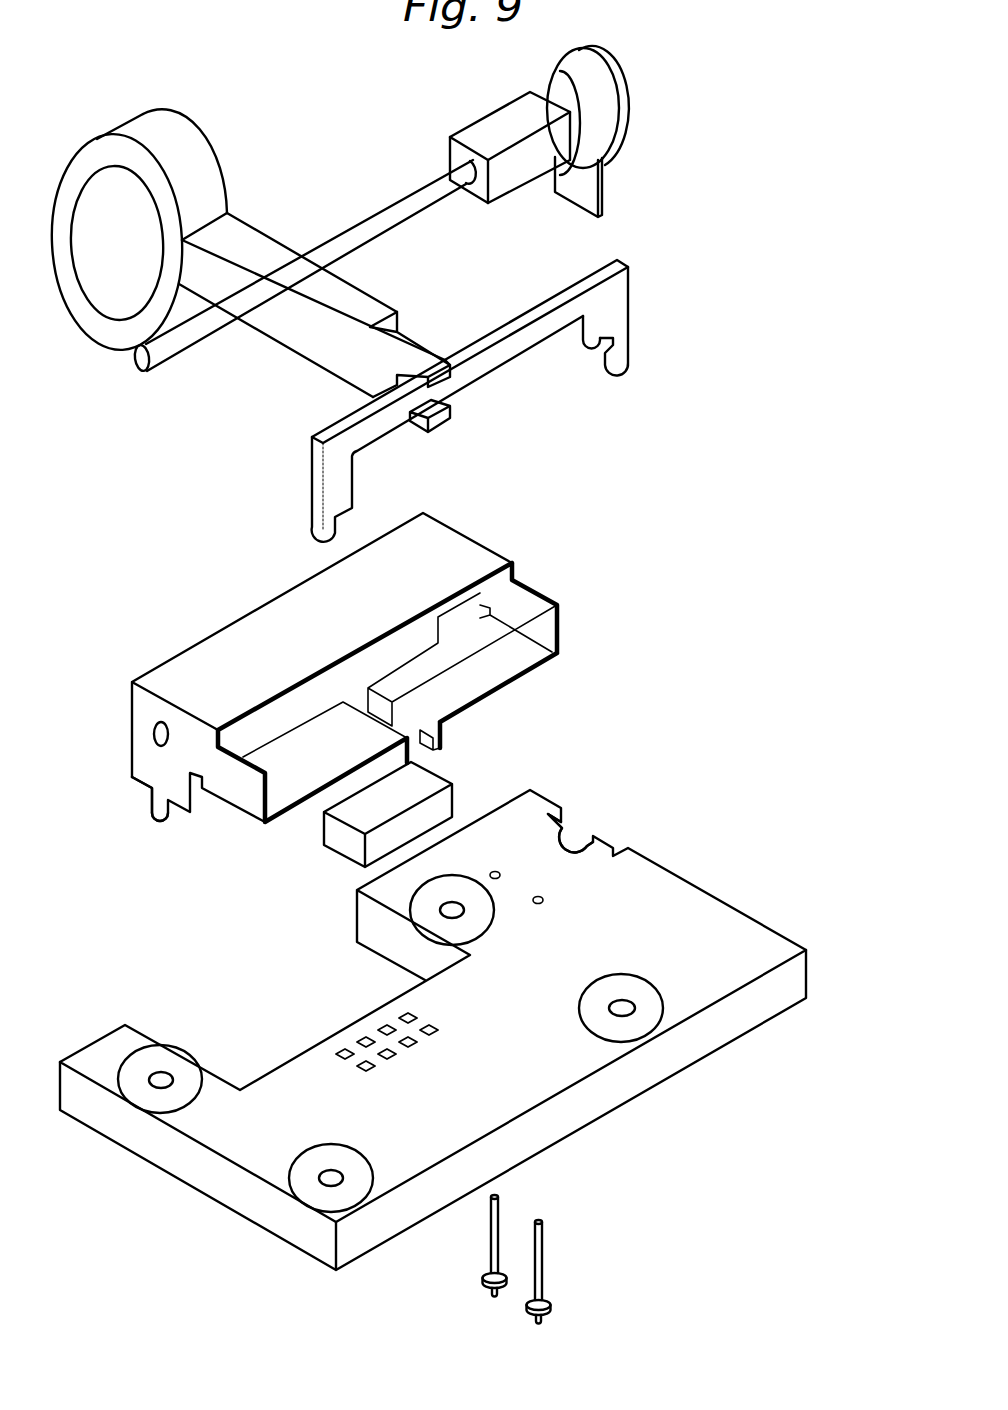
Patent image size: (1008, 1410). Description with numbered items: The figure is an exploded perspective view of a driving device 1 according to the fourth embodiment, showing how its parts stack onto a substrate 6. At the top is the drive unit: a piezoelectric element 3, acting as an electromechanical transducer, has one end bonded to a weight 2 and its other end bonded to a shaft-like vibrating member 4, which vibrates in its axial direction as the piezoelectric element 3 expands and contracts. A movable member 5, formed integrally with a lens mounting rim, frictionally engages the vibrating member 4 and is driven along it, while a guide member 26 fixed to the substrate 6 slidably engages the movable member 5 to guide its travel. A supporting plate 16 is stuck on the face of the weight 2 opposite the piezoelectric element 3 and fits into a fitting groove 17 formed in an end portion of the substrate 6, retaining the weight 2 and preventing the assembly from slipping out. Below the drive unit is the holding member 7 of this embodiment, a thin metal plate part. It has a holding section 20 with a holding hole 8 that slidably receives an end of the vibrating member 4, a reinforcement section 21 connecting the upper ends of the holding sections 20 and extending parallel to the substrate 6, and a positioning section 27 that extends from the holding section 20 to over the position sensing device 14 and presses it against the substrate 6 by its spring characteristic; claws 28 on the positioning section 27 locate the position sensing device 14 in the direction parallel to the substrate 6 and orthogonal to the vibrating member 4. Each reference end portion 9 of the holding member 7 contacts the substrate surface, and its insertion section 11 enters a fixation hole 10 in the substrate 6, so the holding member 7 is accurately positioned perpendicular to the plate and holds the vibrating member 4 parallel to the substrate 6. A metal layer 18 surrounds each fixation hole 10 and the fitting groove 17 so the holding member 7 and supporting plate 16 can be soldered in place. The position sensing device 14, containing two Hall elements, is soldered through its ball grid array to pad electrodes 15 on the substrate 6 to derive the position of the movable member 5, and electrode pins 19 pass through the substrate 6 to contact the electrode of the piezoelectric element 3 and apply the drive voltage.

The driving device 1 is at (305, 133).
The weight 2 is at (620, 131).
The piezoelectric element 3 is at (488, 132).
The vibrating member 4 is at (393, 207).
The movable member 5 is at (270, 262).
The substrate 6 is at (686, 905).
The holding member 7 is at (213, 618).
The holding hole 8 is at (153, 735).
The reference end portion 9 is at (148, 790).
The fixation hole 10 is at (152, 1080).
The insertion section 11 is at (152, 818).
The position sensing device 14 is at (338, 852).
The pad electrode 15 is at (383, 1020).
The supporting plate 16 is at (605, 198).
The fitting groove 17 is at (623, 847).
The metal layer 18 is at (128, 1060).
The electrode pin 19 is at (490, 1257).
The holding section 20 is at (160, 762).
The reinforcement section 21 is at (290, 628).
The guide member 26 is at (500, 360).
The positioning section 27 is at (470, 665).
The claws 28 is at (410, 758).